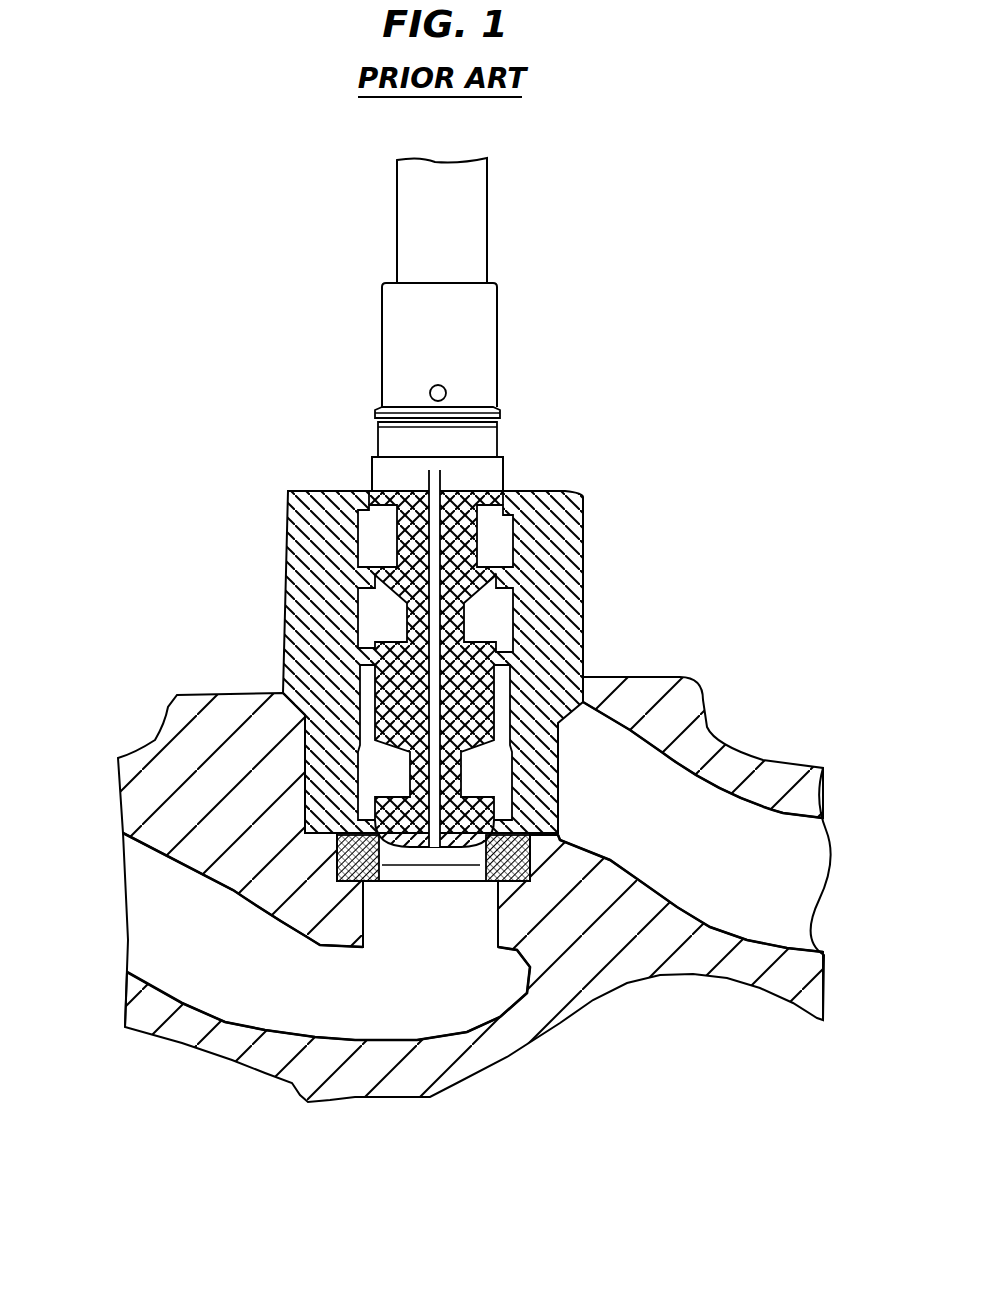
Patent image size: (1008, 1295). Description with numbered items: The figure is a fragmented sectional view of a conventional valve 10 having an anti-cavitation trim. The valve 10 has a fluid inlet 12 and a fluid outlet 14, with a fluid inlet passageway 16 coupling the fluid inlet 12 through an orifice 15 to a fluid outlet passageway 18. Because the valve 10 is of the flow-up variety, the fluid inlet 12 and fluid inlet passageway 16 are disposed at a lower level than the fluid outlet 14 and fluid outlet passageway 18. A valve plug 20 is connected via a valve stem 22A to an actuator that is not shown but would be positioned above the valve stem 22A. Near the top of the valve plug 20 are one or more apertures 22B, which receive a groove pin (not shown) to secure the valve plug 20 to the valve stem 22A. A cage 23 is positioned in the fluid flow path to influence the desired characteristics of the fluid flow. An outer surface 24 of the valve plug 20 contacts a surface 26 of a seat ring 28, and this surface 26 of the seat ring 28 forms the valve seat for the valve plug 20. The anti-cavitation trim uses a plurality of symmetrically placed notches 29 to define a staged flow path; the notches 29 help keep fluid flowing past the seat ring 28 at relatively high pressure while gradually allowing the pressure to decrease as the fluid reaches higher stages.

The valve 10 is at (622, 1008).
The fluid inlet 12 is at (123, 927).
The fluid outlet 14 is at (475, 893).
The orifice 15 is at (463, 860).
The fluid inlet passageway 16 is at (162, 908).
The fluid outlet passageway 18 is at (795, 858).
The valve plug 20 is at (430, 800).
The valve stem 22A is at (480, 230).
The aperture 22B is at (447, 389).
The cage 23 is at (448, 662).
The outer surface 24 is at (585, 672).
The surface 26 is at (382, 847).
The seat ring 28 is at (335, 853).
The notch 29 is at (483, 620).